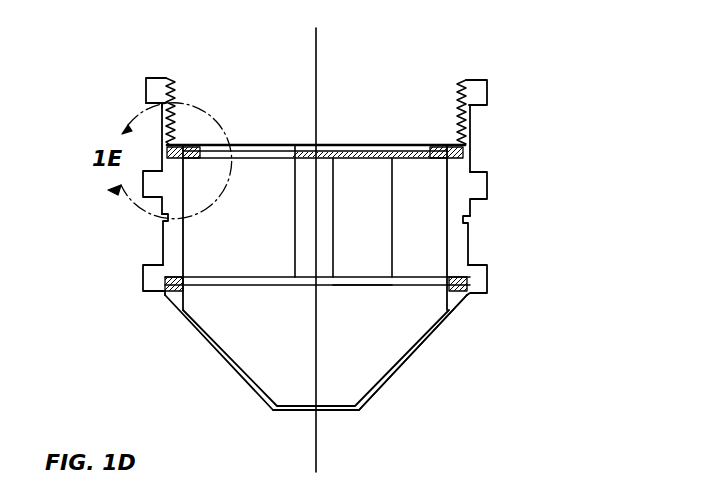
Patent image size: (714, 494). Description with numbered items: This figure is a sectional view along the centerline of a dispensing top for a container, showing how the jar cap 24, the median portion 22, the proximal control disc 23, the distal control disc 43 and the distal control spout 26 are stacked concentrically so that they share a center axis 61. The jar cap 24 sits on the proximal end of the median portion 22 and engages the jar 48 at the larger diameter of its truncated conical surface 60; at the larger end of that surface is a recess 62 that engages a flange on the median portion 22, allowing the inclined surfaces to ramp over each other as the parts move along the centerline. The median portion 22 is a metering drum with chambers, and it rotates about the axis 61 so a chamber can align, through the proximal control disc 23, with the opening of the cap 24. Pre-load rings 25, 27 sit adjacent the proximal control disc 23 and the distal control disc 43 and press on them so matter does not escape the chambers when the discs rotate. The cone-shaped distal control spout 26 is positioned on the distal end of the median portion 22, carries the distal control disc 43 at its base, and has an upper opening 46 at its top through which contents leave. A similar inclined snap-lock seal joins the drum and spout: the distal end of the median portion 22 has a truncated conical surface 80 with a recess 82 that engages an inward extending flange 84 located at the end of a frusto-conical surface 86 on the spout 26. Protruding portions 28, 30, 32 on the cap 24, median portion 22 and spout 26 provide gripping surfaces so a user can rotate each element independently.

The median portion 22 is at (255, 252).
The proximal control disc 23 is at (356, 146).
The jar cap 24 is at (331, 143).
The pre-load ring 25 is at (188, 152).
The distal control spout 26 is at (418, 350).
The pre-load ring 27 is at (170, 296).
The protruding portion 28 is at (150, 90).
The protruding portion 30 is at (151, 214).
The protruding portion 32 is at (143, 284).
The distal control disc 43 is at (361, 289).
The upper opening 46 is at (320, 456).
The jar 48 is at (362, 26).
The truncated conical surface 60 is at (162, 130).
The center axis 61 is at (300, 143).
The recess 62 is at (147, 103).
The truncated conical surface 80 is at (469, 240).
The recess 82 is at (464, 219).
The inward extending flange 84 is at (162, 218).
The frusto-conical surface 86 is at (168, 243).